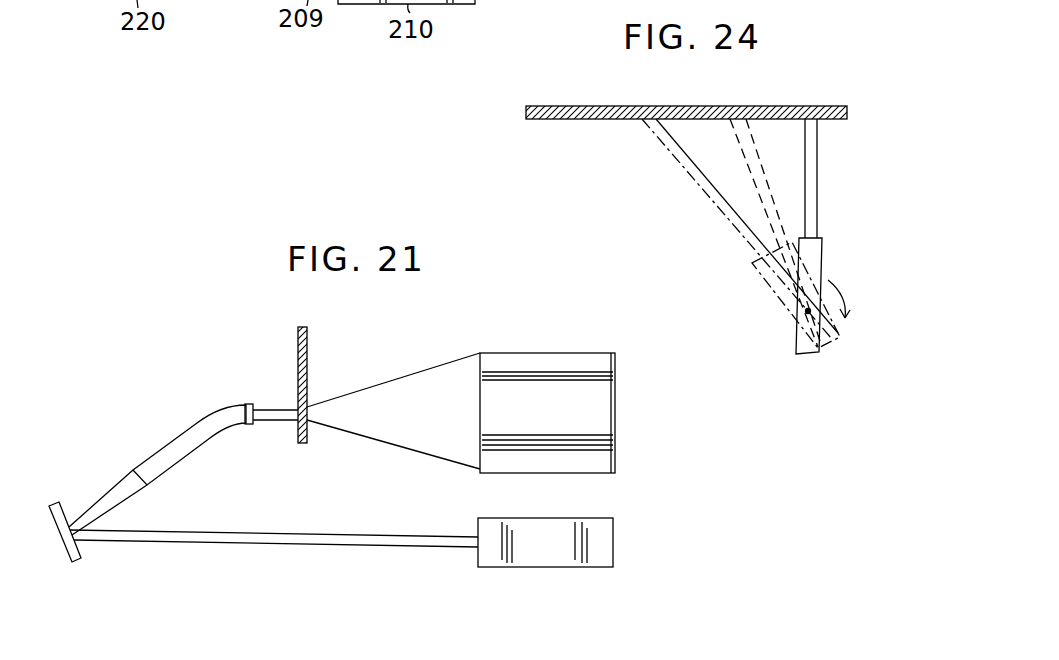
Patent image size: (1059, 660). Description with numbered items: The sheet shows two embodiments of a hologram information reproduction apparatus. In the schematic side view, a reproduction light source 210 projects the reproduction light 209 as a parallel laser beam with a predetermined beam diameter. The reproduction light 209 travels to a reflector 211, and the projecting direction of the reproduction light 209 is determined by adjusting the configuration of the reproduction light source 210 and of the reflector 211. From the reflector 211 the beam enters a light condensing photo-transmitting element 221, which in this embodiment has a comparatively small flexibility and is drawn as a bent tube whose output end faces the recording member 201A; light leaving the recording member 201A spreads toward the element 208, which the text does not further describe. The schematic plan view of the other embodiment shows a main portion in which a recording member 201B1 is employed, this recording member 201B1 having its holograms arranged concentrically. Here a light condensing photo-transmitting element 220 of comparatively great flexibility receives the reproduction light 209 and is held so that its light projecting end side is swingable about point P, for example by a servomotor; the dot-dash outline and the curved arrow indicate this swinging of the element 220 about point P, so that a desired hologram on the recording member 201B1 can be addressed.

In FIG. 21, the recording member 201A is at (308, 344).
In FIG. 24, the recording member 201B1 is at (781, 93).
In FIG. 21, the photodetector array 208 is at (542, 359).
In FIG. 24, the reproduction light 209 is at (817, 197).
In FIG. 21, the reproduction light 209 is at (352, 537).
In FIG. 21, the reproduction light source 210 is at (541, 567).
In FIG. 21, the reflector 211 is at (58, 504).
In FIG. 24, the light condensing photo-transmitting element 220 is at (822, 247).
In FIG. 21, the light condensing photo-transmitting element 221 is at (212, 418).
In FIG. 24, the point P is at (800, 316).